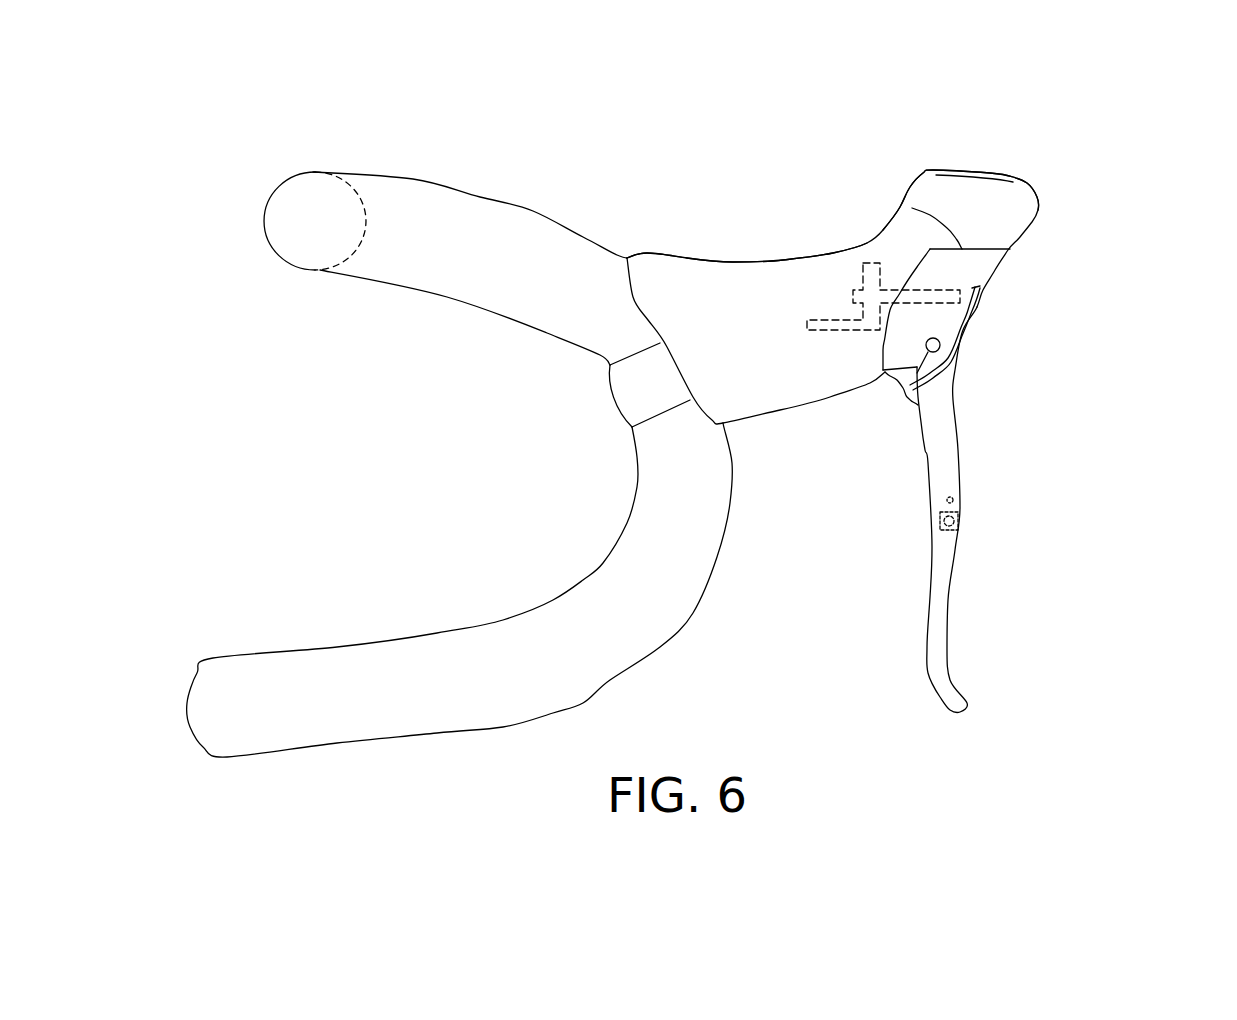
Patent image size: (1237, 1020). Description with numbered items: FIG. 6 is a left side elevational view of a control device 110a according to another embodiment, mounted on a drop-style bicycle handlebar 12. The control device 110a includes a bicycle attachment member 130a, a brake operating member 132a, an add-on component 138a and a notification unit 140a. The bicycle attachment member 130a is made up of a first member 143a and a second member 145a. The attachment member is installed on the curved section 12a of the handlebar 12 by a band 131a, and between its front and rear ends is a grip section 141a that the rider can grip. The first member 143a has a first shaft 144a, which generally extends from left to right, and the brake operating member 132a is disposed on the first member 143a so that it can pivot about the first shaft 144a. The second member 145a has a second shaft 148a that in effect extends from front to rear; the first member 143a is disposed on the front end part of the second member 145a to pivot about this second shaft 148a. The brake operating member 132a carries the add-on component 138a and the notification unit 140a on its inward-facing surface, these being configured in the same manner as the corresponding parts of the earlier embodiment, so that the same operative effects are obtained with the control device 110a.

The handlebar 12 is at (422, 170).
The curved section 12a is at (723, 473).
The control device 110a is at (890, 163).
The bicycle attachment member 130a is at (698, 253).
The band 131a is at (648, 383).
The brake operating member 132a is at (940, 413).
The add-on component 138a is at (960, 513).
The notification unit 140a is at (963, 497).
The grip section 141a is at (720, 297).
The first member 143a is at (968, 277).
The first shaft 144a is at (916, 394).
The second member 145a is at (793, 257).
The second shaft 148a is at (935, 288).